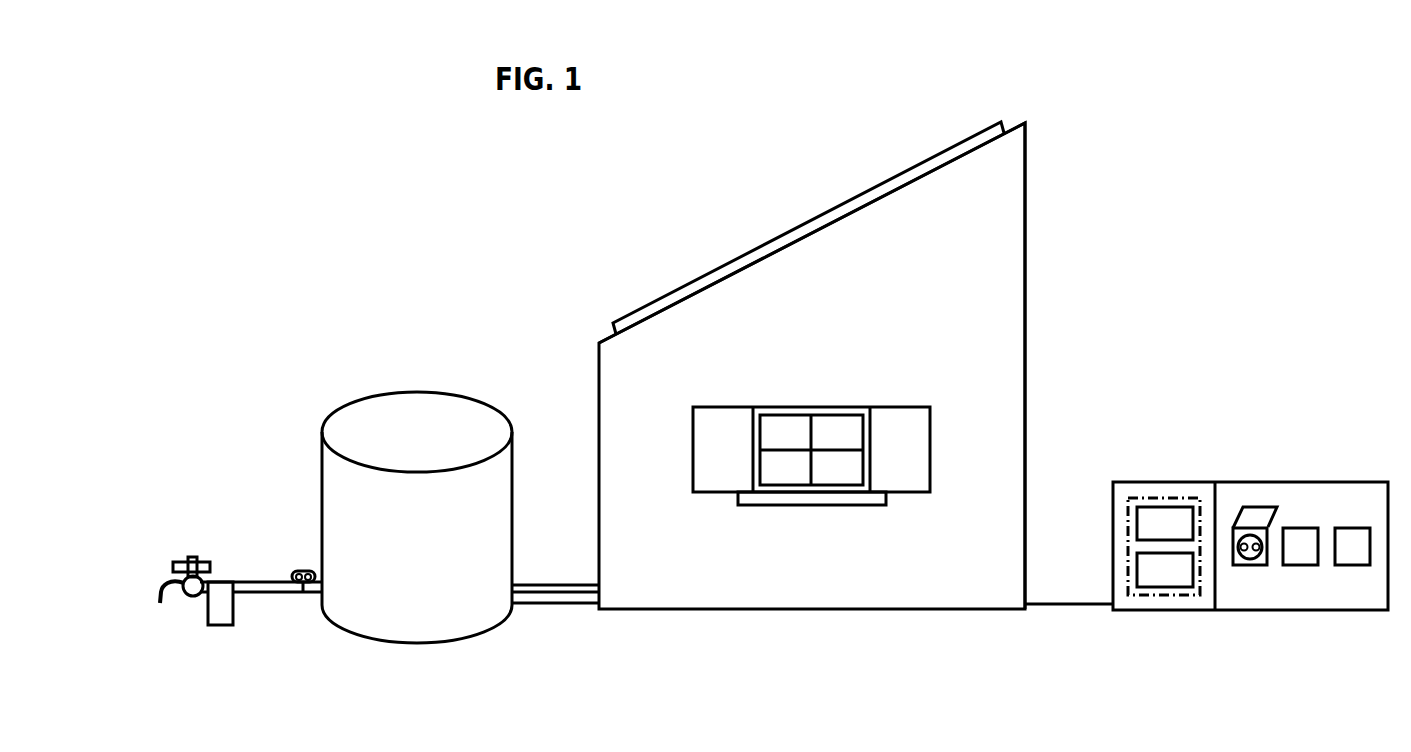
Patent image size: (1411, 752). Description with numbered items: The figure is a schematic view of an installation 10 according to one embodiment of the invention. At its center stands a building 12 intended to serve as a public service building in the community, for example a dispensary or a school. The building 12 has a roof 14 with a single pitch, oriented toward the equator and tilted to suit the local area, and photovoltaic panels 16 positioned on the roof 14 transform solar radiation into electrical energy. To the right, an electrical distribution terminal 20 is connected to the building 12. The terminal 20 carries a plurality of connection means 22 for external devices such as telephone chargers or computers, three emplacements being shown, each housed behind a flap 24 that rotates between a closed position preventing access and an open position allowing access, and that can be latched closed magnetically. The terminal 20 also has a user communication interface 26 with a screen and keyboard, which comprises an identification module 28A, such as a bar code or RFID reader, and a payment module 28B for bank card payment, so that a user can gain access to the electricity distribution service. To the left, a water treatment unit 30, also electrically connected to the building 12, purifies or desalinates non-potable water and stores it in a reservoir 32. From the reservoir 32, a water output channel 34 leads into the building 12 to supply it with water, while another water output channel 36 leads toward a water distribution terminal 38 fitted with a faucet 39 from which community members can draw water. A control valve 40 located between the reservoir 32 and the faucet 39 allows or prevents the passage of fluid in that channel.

The installation 10 is at (436, 175).
The building 12 is at (1008, 237).
The roof 14 is at (1010, 125).
The photovoltaic panels 16 is at (808, 229).
The electrical distribution terminal 20 is at (1250, 523).
The connection means 22 is at (1236, 575).
The flap 24 is at (1255, 517).
The user communication interface 26 is at (1162, 510).
The identification module 28A is at (1165, 523).
The payment module 28B is at (1165, 570).
The water treatment unit 30 is at (395, 477).
The reservoir 32 is at (340, 516).
The water output channel 34 is at (556, 585).
The water output channel 36 is at (265, 593).
The water distribution terminal 38 is at (222, 634).
The faucet 39 is at (193, 592).
The control valve 40 is at (303, 596).